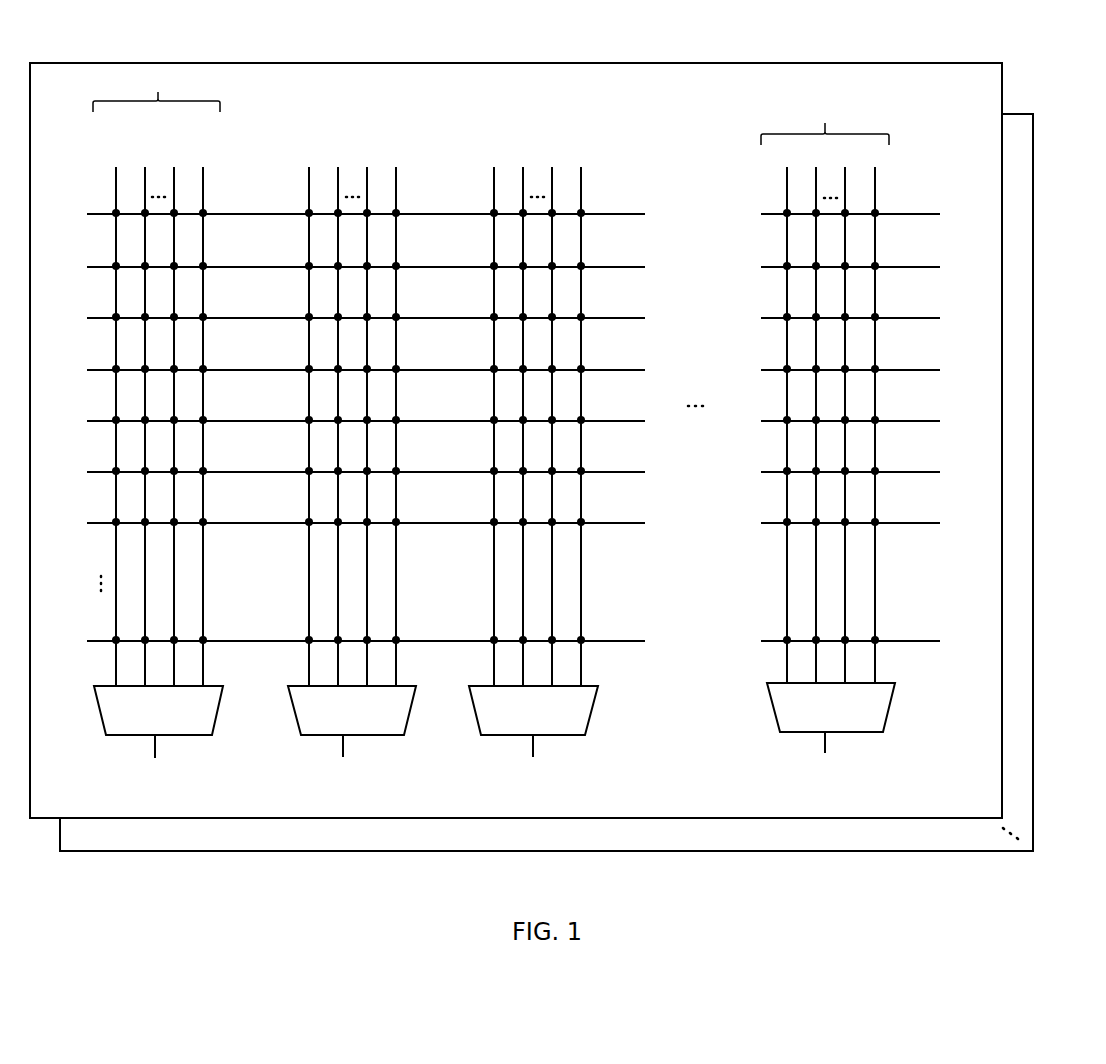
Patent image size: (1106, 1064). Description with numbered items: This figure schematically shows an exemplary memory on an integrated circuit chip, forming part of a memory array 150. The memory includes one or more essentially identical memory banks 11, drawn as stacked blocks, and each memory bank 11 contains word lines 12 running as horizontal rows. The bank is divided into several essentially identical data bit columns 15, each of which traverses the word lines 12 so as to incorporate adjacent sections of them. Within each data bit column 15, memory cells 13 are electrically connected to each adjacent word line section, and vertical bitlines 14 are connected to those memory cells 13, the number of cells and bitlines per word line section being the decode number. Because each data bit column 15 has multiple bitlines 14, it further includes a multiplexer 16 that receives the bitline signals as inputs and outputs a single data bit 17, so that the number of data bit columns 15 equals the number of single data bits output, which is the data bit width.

The memory array 150 is at (563, 451).
The memory bank 11 is at (960, 809).
The word line 12 is at (87, 214).
The memory cell 13 is at (114, 212).
The bitline 14 is at (116, 167).
The data bit column 15 is at (491, 106).
The multiplexer 16 is at (99, 705).
The single data bit 17 is at (153, 741).